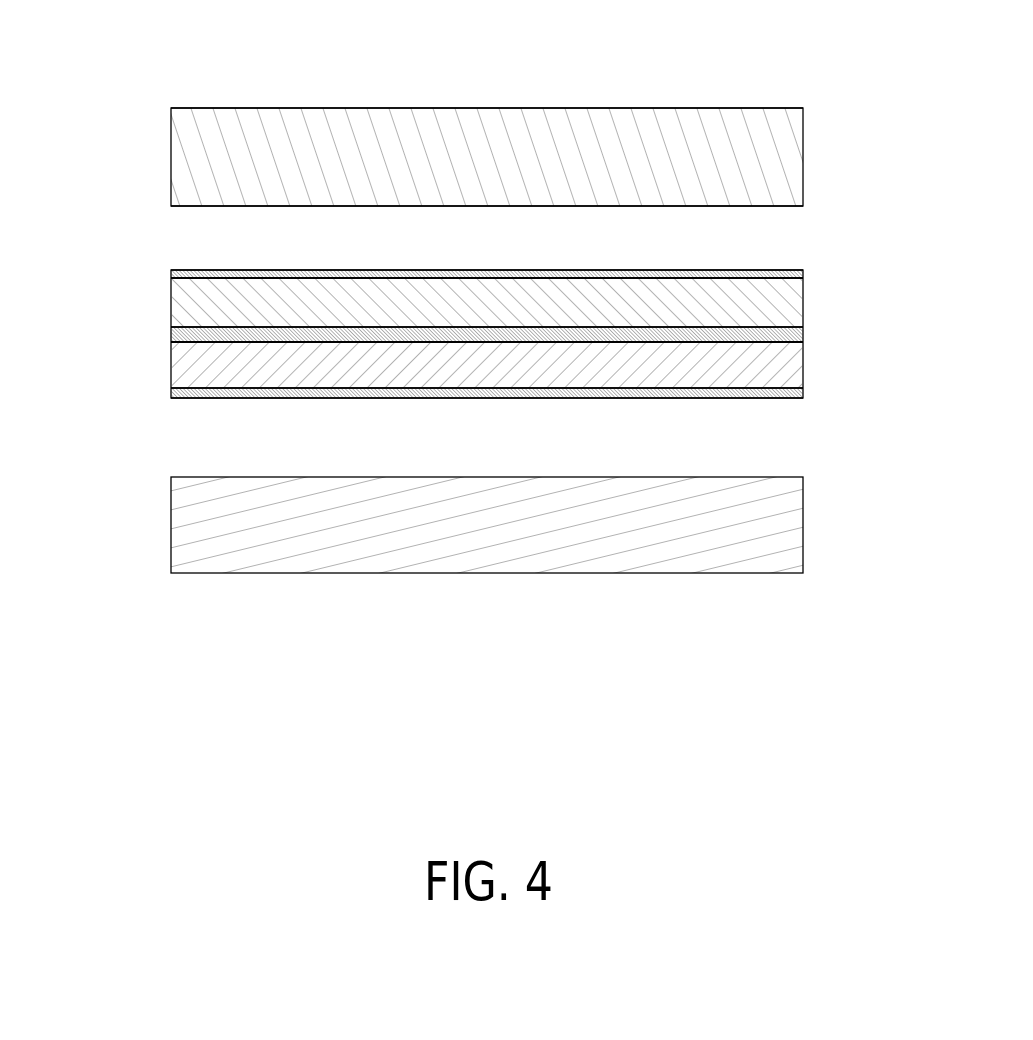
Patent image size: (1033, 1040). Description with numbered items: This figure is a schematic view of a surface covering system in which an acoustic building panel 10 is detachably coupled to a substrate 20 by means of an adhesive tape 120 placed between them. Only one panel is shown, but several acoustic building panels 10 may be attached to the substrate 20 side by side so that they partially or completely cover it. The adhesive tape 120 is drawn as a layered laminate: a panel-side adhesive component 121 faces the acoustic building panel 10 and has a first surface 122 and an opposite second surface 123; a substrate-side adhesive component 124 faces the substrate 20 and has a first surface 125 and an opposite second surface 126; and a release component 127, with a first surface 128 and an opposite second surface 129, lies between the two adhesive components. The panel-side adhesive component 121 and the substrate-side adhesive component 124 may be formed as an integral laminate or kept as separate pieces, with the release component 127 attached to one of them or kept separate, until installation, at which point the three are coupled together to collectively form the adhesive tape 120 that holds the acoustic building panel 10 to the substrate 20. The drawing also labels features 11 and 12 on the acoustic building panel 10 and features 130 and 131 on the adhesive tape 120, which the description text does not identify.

The acoustic building panel 10 is at (392, 147).
The upper surface of upper plate 11 is at (495, 107).
The lower surface of upper plate 12 is at (787, 207).
The substrate 20 is at (291, 523).
The adhesive tape 120 is at (155, 333).
The panel-side adhesive component 121 is at (781, 305).
The first surface 122 is at (795, 334).
The second surface 123 is at (779, 272).
The substrate-side adhesive component 124 is at (212, 356).
The first surface 125 is at (208, 340).
The second surface 126 is at (193, 390).
The release component 127 is at (777, 336).
The first surface 128 is at (652, 343).
The second surface 129 is at (620, 312).
The upper coating layer 130 is at (195, 272).
The lower coating layer 131 is at (777, 398).